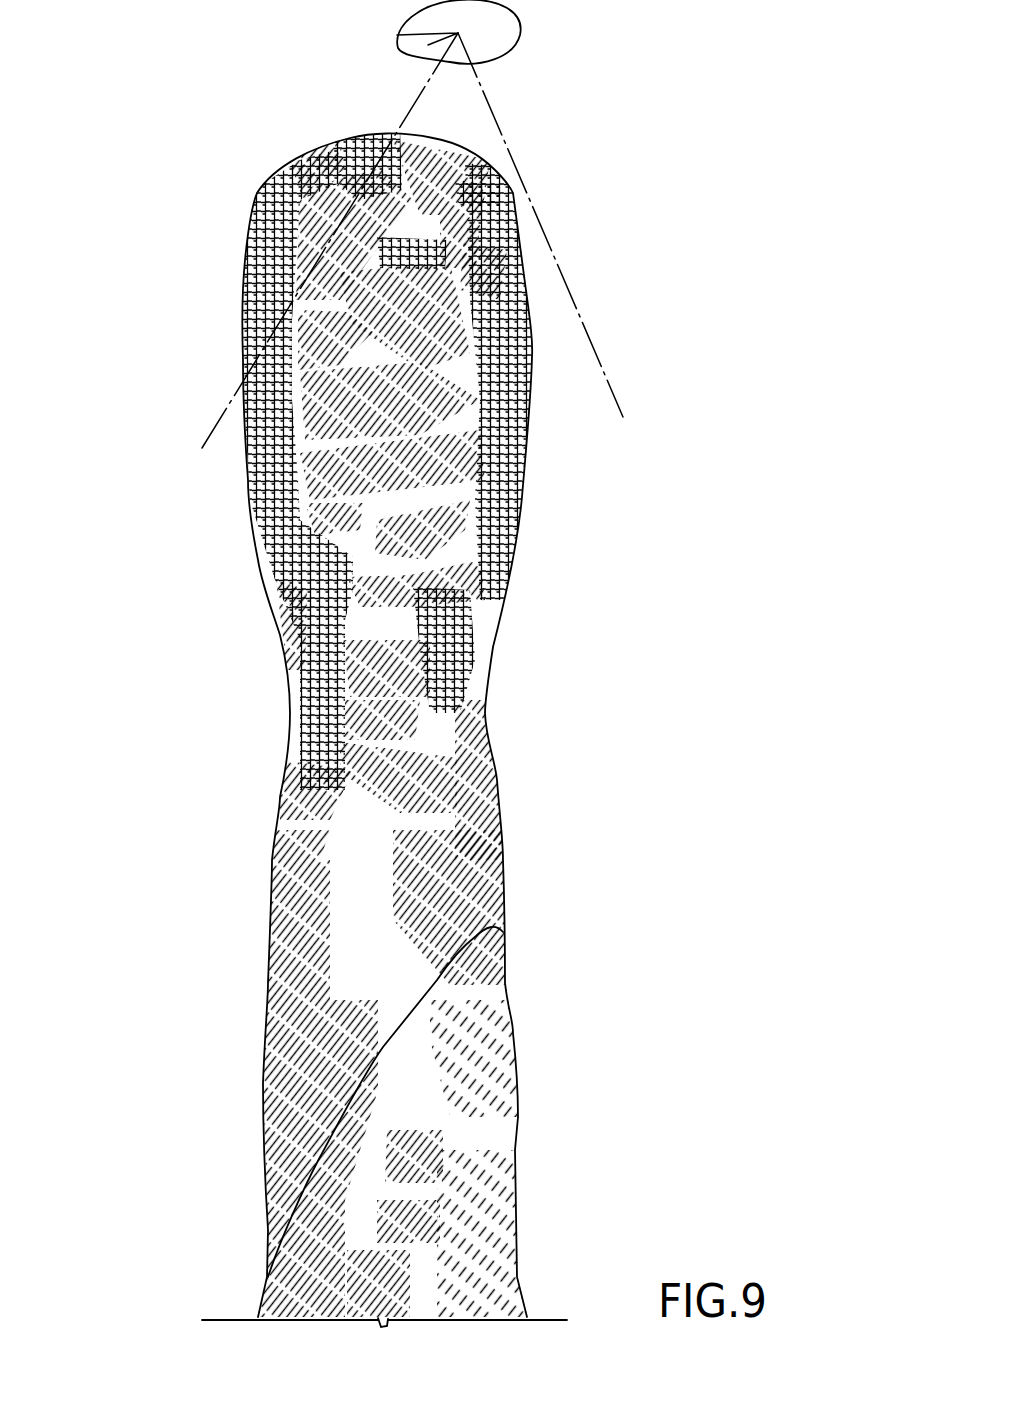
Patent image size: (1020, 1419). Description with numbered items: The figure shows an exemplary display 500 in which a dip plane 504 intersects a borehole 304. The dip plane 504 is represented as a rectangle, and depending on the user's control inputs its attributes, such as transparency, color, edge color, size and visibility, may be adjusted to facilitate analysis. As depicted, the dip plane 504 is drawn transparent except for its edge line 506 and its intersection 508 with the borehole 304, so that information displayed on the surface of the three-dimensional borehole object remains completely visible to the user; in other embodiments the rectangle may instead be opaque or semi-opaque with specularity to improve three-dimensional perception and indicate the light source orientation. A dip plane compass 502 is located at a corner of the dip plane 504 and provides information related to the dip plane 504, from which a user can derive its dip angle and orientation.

The display 500 is at (188, 1000).
The dip plane compass 502 is at (517, 33).
The dip plane 504 is at (573, 463).
The edge line 506 is at (223, 412).
The borehole 304 is at (495, 633).
The intersection 508 is at (463, 953).